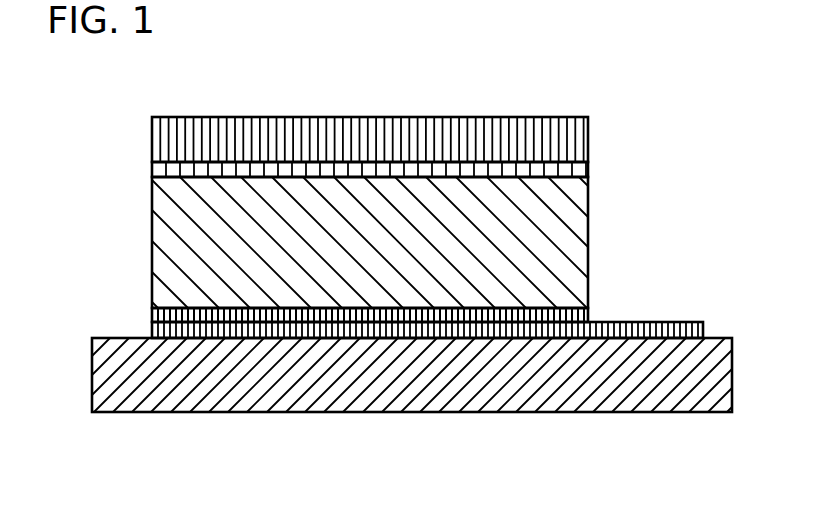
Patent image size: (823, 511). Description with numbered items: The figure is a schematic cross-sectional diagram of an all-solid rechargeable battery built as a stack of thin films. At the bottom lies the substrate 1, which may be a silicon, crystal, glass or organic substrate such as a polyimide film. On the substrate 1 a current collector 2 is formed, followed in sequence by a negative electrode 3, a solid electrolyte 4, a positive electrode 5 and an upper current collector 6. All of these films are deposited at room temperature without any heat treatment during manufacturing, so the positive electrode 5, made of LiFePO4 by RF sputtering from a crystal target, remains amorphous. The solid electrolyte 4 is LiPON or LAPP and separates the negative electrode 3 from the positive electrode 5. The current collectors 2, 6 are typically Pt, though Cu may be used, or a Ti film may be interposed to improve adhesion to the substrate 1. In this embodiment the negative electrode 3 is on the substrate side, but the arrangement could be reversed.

The substrate 1 is at (103, 370).
The current collector 2 is at (153, 330).
The negative electrode 3 is at (152, 315).
The solid electrolyte 4 is at (163, 230).
The positive electrode 5 is at (160, 171).
The current collector 6 is at (162, 131).